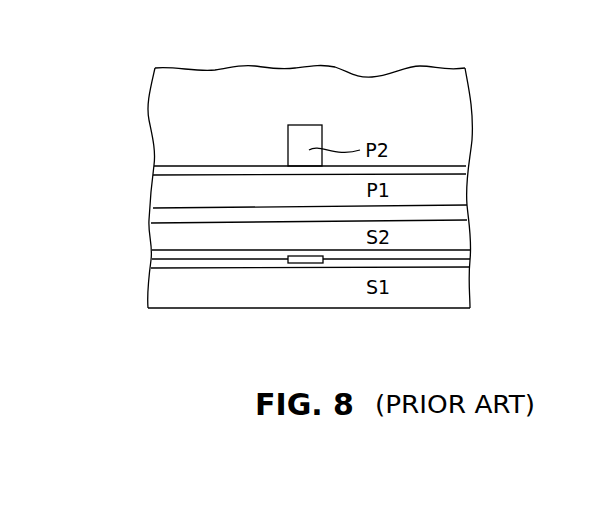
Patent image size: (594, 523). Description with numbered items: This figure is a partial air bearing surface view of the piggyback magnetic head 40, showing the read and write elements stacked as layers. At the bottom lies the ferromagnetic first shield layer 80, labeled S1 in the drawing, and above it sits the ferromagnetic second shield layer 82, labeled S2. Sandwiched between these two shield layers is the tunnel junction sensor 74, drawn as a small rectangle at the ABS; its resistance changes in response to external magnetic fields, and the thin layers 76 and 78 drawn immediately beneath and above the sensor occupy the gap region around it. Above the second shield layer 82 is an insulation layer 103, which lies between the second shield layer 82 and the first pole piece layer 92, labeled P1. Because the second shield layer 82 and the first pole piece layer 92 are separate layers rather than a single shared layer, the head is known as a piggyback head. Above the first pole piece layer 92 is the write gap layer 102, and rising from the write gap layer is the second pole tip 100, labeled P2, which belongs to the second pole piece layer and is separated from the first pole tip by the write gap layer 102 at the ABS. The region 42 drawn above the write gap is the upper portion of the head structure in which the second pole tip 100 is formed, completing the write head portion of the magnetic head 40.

The piggyback magnetic head 40 is at (492, 82).
The second pole layer region 42 is at (157, 95).
The second pole tip 100 is at (302, 132).
The write gap layer 102 is at (222, 167).
The first pole piece layer 92 is at (158, 187).
The insulation layer 103 is at (460, 213).
The second shield layer 82 is at (155, 240).
The read gap layer 78 is at (428, 257).
The tunnel junction sensor 74 is at (303, 264).
The first read gap layer 76 is at (212, 268).
The first shield layer 80 is at (460, 290).